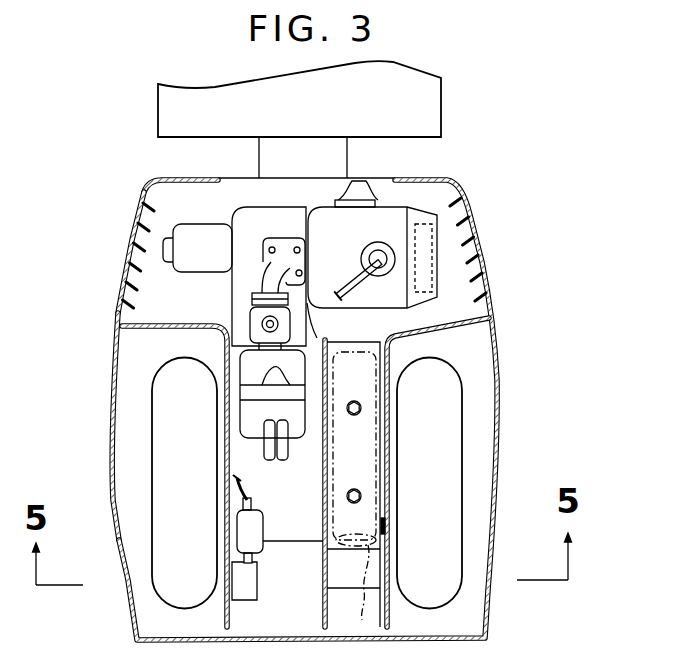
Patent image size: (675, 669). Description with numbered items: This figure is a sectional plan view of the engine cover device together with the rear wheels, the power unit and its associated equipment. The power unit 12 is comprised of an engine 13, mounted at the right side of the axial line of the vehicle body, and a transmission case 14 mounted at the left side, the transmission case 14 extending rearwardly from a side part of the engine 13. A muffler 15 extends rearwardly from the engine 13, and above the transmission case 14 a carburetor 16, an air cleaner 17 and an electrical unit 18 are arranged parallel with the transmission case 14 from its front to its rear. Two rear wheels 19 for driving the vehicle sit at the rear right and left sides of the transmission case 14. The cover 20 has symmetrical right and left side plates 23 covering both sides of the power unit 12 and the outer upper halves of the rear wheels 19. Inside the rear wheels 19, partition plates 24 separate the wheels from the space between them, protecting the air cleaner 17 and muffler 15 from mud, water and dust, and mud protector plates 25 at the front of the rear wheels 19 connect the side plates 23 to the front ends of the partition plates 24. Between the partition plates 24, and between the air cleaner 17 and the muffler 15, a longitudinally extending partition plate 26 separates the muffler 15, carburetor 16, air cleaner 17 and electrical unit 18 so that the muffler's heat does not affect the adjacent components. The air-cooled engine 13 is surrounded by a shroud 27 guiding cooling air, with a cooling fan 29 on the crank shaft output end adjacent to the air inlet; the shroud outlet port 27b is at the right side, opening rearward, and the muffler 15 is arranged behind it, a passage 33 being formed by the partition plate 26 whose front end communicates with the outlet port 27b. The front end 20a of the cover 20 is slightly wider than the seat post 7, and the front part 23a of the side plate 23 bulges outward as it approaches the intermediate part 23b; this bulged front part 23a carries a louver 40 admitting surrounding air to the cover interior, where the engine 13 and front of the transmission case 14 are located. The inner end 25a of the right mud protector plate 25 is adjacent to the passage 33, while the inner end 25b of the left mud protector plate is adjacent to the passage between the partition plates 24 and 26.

The seat post 7 is at (438, 100).
The power unit 12 is at (236, 316).
The engine 13 is at (424, 242).
The transmission case 14 is at (270, 222).
The muffler 15 is at (378, 472).
The carburetor 16 is at (256, 318).
The air cleaner 17 is at (301, 440).
The electrical unit 18 is at (258, 529).
The rear wheels 19 is at (167, 383).
The cover 20 is at (303, 393).
The front end of the cover 20a is at (190, 178).
The side plates 23 is at (122, 552).
The front part of the side plate 23a is at (134, 226).
The intermediate part of the side plate 23b is at (113, 404).
The partition plates 24 is at (245, 503).
The mud protector plates 25 is at (283, 453).
The inner end of the right mud protector plate 25a is at (388, 342).
The inner end of the left mud protector plate 25b is at (225, 333).
The partition plate 26 is at (323, 586).
The shroud 27 is at (397, 234).
The outlet port 27b is at (318, 322).
The cooling fan 29 is at (437, 293).
The passage 33 is at (380, 438).
The louver 40 is at (481, 293).